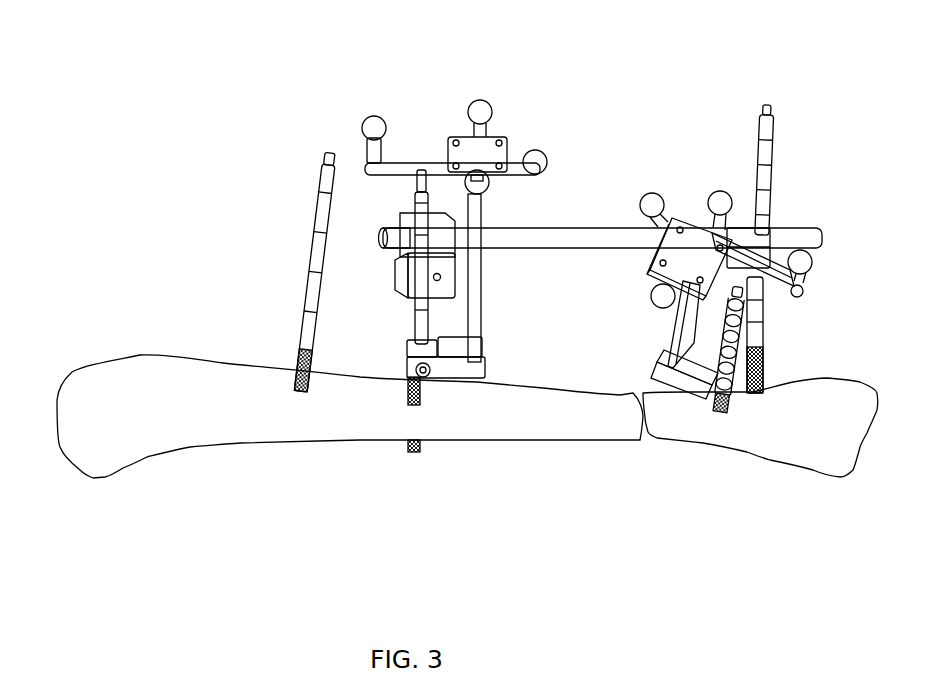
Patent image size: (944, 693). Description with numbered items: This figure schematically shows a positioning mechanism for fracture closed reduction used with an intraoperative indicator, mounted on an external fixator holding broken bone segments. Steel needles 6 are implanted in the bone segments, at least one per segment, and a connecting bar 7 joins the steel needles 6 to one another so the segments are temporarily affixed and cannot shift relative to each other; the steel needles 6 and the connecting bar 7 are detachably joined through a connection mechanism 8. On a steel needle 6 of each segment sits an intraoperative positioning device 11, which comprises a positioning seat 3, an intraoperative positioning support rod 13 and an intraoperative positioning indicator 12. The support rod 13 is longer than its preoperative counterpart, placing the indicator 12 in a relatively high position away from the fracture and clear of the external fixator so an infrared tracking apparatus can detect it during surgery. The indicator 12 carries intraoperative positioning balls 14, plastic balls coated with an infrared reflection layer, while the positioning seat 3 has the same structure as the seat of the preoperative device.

The positioning seat 3 is at (458, 373).
The steel needle 6 is at (765, 167).
The connecting bar 7 is at (565, 237).
The connection mechanism 8 is at (808, 270).
The intraoperative positioning device 11 is at (482, 302).
The intraoperative positioning indicator 12 is at (478, 148).
The intraoperative positioning support rod 13 is at (474, 292).
The intraoperative positioning balls 14 is at (482, 103).